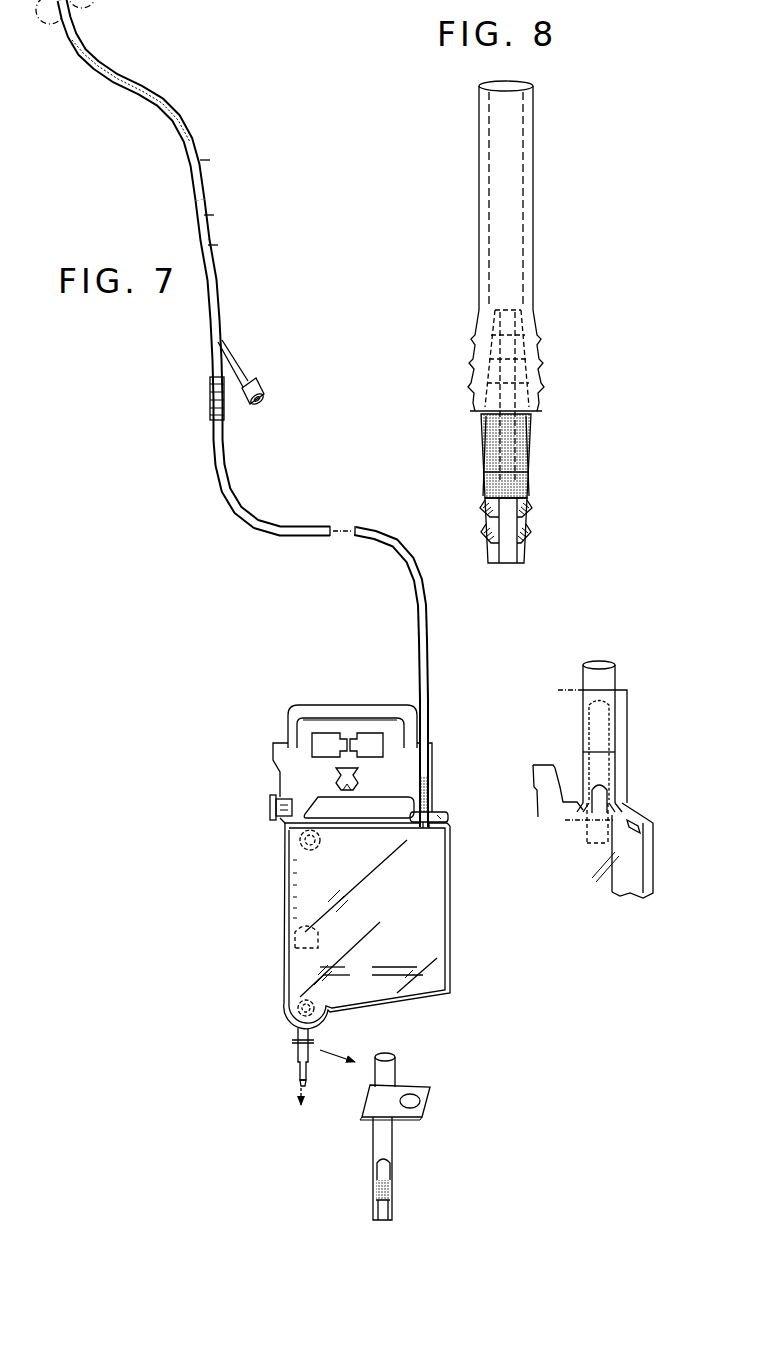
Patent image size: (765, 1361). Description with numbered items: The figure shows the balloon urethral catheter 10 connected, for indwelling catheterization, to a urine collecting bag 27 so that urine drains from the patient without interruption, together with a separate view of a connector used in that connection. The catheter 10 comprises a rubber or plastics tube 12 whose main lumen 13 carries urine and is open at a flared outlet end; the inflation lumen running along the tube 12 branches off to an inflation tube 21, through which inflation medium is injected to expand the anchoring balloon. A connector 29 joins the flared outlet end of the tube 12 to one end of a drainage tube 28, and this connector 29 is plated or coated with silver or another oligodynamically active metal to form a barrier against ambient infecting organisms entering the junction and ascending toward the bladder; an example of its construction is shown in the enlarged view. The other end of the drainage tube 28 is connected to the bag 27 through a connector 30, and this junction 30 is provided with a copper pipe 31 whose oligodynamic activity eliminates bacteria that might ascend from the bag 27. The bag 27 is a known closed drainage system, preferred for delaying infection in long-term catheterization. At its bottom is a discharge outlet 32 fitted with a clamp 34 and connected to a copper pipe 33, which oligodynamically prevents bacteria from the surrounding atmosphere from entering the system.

In FIG. 7, the urethral catheter 10 is at (195, 140).
In FIG. 7, the tube 12 is at (218, 258).
In FIG. 8, the main lumen 13 is at (481, 425).
In FIG. 7, the inflation tube 21 is at (238, 358).
In FIG. 7, the urine collecting bag 27 is at (453, 907).
In FIG. 7, the drainage tube 28 is at (428, 610).
In FIG. 7, the connector 29 is at (209, 398).
In FIG. 8, the connector 29 is at (527, 457).
In FIG. 7, the connector 30 is at (447, 793).
In FIG. 7, the pipe 31 is at (520, 795).
In FIG. 7, the discharge outlet 32 is at (297, 1054).
In FIG. 7, the copper pipe 33 is at (306, 1077).
In FIG. 7, the clamp 34 is at (297, 1042).